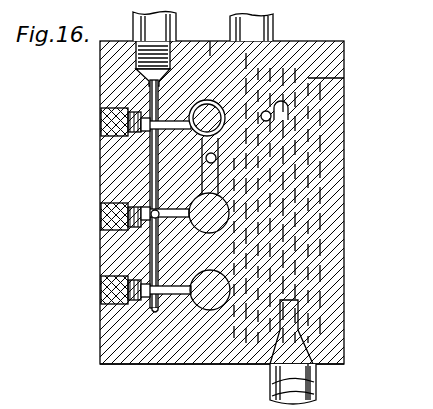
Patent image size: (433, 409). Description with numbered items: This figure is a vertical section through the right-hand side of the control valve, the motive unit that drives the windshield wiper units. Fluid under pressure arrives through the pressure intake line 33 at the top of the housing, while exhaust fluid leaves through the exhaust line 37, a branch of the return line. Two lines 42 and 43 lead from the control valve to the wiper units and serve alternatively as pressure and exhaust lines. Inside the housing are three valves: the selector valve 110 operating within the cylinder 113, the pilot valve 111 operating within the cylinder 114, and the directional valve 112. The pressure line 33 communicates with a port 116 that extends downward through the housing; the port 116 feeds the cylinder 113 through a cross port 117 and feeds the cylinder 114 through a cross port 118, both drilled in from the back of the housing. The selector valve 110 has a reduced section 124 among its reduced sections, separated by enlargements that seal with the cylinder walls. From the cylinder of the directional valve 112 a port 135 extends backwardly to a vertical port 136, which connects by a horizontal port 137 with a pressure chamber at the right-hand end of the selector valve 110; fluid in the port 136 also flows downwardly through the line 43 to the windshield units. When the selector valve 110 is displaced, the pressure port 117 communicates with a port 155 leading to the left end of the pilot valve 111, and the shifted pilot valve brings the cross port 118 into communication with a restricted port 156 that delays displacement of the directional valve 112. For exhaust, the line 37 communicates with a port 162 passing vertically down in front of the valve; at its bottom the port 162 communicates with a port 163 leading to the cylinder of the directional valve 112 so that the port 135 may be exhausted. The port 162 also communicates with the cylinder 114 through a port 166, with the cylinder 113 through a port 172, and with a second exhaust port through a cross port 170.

The pressure intake line 33 is at (265, 18).
The exhaust line 37 is at (160, 22).
The line 42 is at (306, 385).
The line 43 is at (306, 366).
The selector valve 110 is at (305, 72).
The pilot valve 111 is at (222, 204).
The directional valve 112 is at (250, 260).
The cylinder 113 is at (204, 30).
The cylinder 114 is at (224, 216).
The port 116 is at (232, 172).
The cross port 117 is at (300, 96).
The cross port 118 is at (226, 192).
The reduced section 124 is at (140, 136).
The port 135 is at (245, 290).
The vertical port 136 is at (292, 156).
The horizontal port 137 is at (264, 108).
The port 155 is at (322, 126).
The port 156 is at (96, 263).
The port 162 is at (140, 87).
The port 163 is at (160, 292).
The port 166 is at (118, 229).
The cross port 170 is at (144, 203).
The port 172 is at (93, 110).